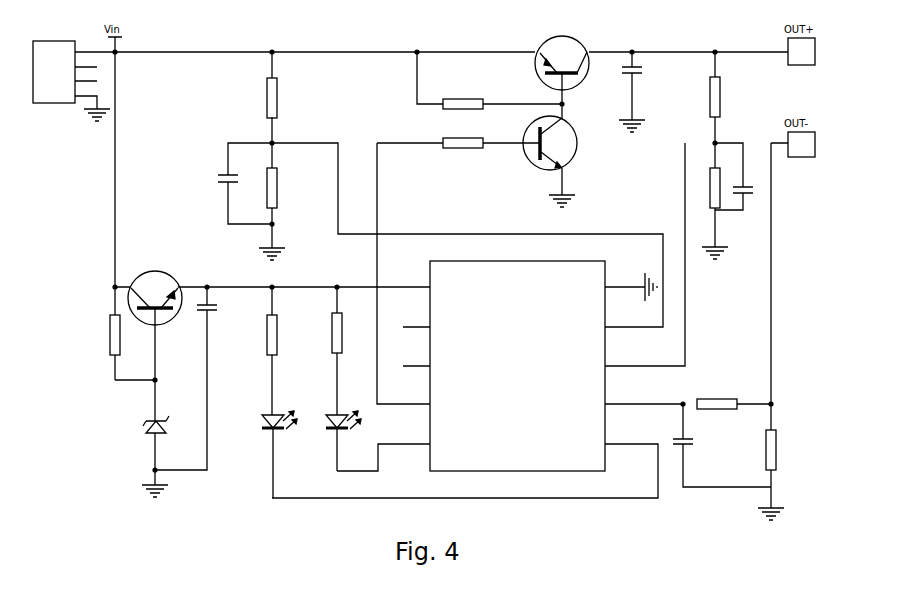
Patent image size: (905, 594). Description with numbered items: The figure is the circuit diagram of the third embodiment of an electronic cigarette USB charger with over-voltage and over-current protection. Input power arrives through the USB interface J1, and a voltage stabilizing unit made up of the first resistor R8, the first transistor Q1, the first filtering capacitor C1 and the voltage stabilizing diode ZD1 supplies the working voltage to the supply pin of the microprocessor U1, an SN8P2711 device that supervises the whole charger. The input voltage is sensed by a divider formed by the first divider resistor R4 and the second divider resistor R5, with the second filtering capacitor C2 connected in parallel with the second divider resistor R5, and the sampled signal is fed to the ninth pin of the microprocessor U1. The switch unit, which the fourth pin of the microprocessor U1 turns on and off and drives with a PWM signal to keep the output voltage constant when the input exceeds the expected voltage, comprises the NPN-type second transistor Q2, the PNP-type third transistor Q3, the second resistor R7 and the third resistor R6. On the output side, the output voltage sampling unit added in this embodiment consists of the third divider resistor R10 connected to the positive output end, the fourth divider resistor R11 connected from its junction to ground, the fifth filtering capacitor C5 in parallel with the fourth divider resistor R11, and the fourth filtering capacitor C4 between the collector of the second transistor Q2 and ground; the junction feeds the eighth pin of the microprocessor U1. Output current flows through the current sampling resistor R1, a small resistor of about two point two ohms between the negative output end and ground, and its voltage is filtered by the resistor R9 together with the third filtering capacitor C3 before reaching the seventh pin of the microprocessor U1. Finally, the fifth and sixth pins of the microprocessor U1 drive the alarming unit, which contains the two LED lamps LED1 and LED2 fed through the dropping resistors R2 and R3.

The USB interface J1 is at (71, 72).
The current sampling resistor R1 is at (775, 462).
The dropping resistor R2 is at (280, 351).
The dropping resistor R3 is at (345, 351).
The first divider resistor R4 is at (280, 97).
The second divider resistor R5 is at (276, 201).
The third resistor R6 is at (463, 137).
The second resistor R7 is at (463, 98).
The first resistor R8 is at (104, 333).
The resistor R9 is at (717, 398).
The third divider resistor R10 is at (726, 97).
The fourth divider resistor R11 is at (708, 201).
The first filtering capacitor C1 is at (195, 378).
The second filtering capacitor C2 is at (239, 183).
The third filtering capacitor C3 is at (716, 445).
The fourth filtering capacitor C4 is at (641, 92).
The fifth filtering capacitor C5 is at (737, 176).
The first transistor Q1 is at (155, 317).
The second transistor Q2 is at (558, 63).
The third transistor Q3 is at (550, 155).
The voltage stabilizing diode ZD1 is at (140, 438).
The LED lamp LED1 is at (266, 448).
The LED lamp LED2 is at (330, 435).
The microprocessor U1 is at (512, 358).